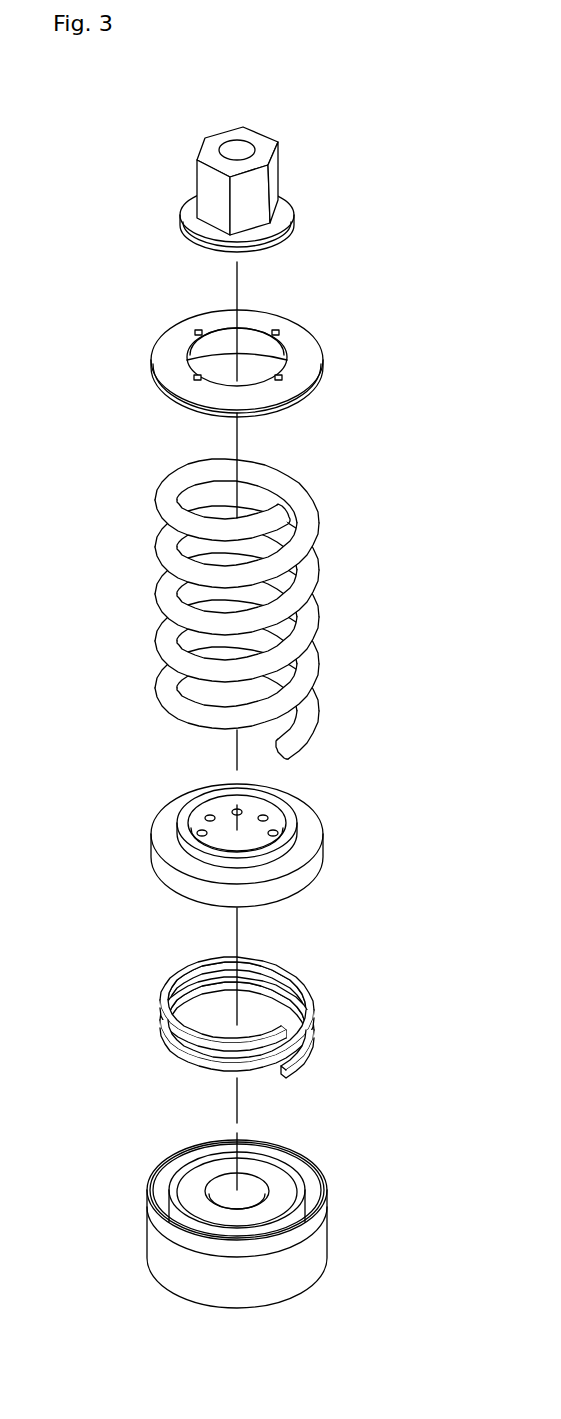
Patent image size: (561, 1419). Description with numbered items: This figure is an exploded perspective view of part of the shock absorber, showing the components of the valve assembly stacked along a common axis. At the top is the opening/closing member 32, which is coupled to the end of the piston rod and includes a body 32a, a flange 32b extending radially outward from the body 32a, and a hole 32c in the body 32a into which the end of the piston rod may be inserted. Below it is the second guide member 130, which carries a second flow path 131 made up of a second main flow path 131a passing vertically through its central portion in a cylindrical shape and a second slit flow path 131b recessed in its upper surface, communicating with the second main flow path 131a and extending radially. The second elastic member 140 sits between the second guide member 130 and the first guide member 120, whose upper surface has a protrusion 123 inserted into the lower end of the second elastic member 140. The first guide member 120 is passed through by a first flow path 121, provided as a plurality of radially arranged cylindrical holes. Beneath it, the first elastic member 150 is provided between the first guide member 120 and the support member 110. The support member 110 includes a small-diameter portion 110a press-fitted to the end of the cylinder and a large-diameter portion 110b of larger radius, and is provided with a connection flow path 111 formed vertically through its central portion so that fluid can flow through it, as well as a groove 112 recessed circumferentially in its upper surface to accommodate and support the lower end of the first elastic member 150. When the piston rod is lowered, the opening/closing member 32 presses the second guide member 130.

The opening/closing member 32 is at (300, 144).
The body 32a is at (260, 182).
The flange 32b is at (287, 233).
The hole 32c is at (237, 153).
The second guide member 130 is at (168, 350).
The second flow path 131 is at (413, 280).
The second main flow path 131a is at (255, 376).
The second slit flow path 131b is at (277, 332).
The second elastic member 140 is at (167, 500).
The first guide member 120 is at (160, 828).
The first flow path 121 is at (267, 813).
The protrusion 123 is at (187, 808).
The first elastic member 150 is at (167, 1000).
The support member 110 is at (160, 1250).
The small-diameter portion 110a is at (328, 1197).
The large-diameter portion 110b is at (318, 1250).
The connection flow path 111 is at (227, 1187).
The groove 112 is at (283, 1173).